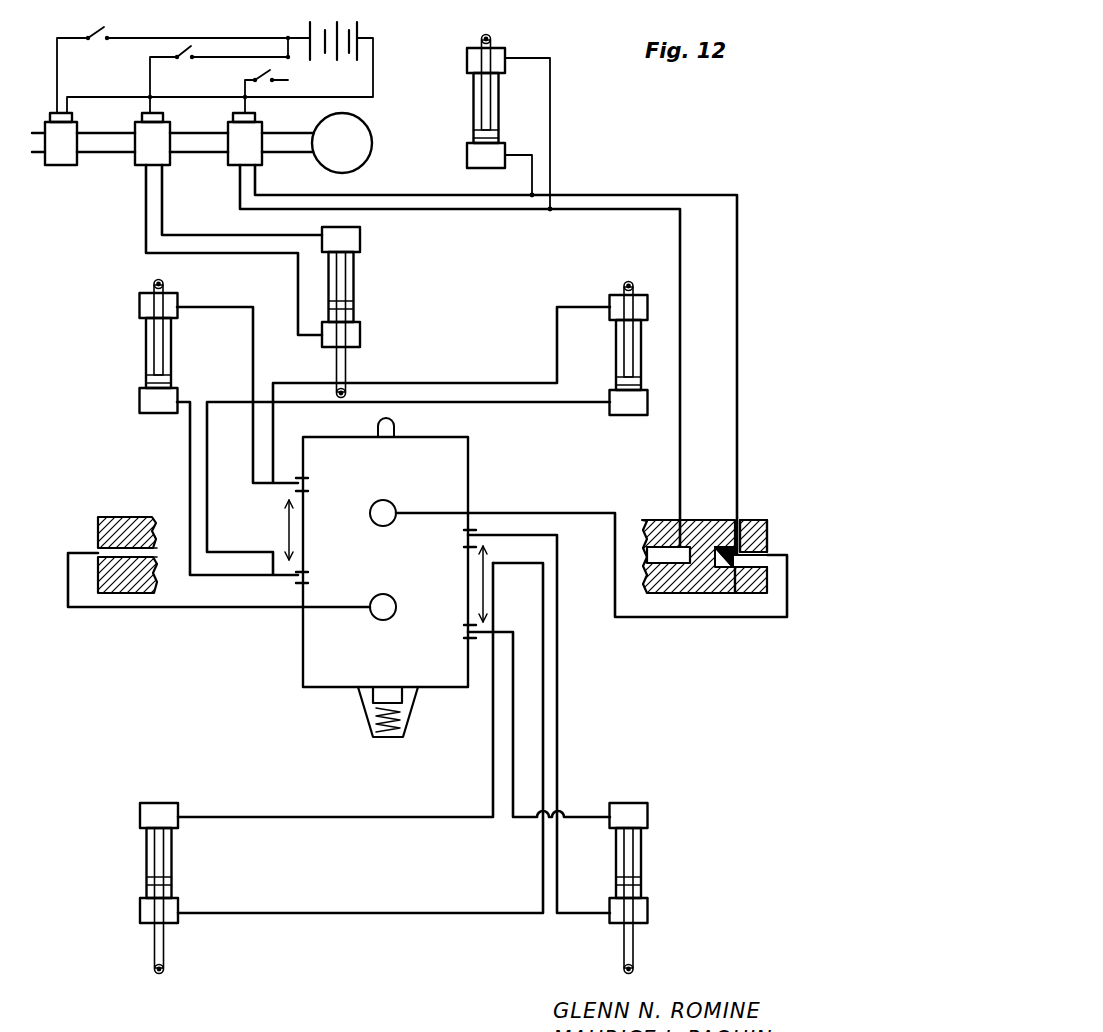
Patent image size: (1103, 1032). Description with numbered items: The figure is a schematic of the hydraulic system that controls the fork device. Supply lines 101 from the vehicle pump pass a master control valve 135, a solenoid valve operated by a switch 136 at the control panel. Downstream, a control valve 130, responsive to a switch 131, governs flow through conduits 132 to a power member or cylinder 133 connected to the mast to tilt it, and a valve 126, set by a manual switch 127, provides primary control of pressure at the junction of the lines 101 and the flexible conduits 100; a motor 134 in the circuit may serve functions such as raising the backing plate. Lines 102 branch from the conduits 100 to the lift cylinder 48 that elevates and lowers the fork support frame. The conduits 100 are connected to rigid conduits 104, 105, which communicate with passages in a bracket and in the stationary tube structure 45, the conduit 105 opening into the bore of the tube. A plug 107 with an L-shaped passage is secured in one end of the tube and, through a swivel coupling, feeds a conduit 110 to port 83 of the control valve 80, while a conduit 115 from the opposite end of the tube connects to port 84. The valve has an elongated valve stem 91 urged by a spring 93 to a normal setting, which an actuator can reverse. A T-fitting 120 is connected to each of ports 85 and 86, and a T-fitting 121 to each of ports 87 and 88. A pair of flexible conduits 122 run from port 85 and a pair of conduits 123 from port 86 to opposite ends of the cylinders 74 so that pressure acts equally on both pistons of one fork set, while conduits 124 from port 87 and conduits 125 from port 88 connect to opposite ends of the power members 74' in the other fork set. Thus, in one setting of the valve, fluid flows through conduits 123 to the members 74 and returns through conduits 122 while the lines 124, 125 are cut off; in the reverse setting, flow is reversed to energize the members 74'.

The switch 136 is at (98, 32).
The switch 131 is at (184, 46).
The manual switch 127 is at (256, 70).
The master control valve 135 is at (58, 162).
The control valve 130 is at (148, 152).
The valve 126 is at (241, 152).
The lines 101 is at (96, 144).
The motor 134 is at (362, 148).
The conduits 132 is at (207, 252).
The power member or cylinder 133 is at (356, 288).
The cylinder 48 is at (467, 112).
The lines 102 is at (532, 163).
The flexible lines or conduits 100 is at (737, 333).
The rigid conduit 105 is at (673, 514).
The power members 74' is at (369, 348).
The flexible conduits 125 is at (294, 382).
The flexible conduits 124 is at (190, 460).
The control valve 80 is at (470, 468).
The valve stem 91 is at (395, 426).
The port 88 is at (308, 484).
The port 87 is at (308, 576).
The port 86 is at (466, 540).
The port 85 is at (466, 636).
The port 83 is at (392, 501).
The port 84 is at (395, 604).
The T-fitting 121 is at (275, 530).
The T-fitting 120 is at (505, 584).
The spring 93 is at (387, 737).
The conduit 110 is at (790, 648).
The conduit 115 is at (194, 612).
The tube structure 45 is at (116, 512).
The rigid conduit 104 is at (740, 520).
The plug 107 is at (720, 588).
The flexible conduits 123 is at (543, 731).
The flexible conduits 122 is at (493, 742).
The cylinder 74 is at (389, 888).